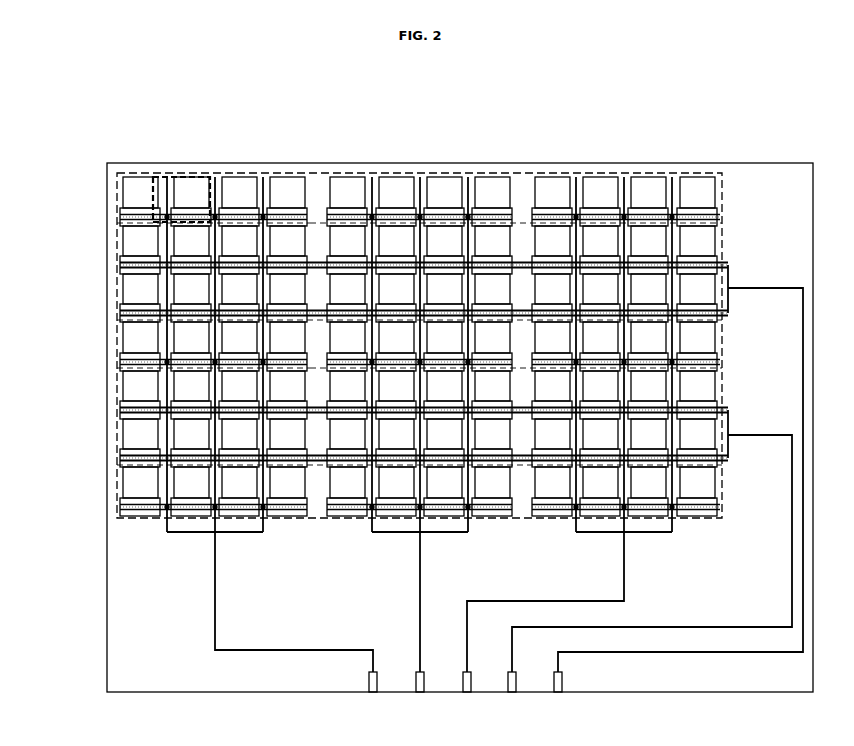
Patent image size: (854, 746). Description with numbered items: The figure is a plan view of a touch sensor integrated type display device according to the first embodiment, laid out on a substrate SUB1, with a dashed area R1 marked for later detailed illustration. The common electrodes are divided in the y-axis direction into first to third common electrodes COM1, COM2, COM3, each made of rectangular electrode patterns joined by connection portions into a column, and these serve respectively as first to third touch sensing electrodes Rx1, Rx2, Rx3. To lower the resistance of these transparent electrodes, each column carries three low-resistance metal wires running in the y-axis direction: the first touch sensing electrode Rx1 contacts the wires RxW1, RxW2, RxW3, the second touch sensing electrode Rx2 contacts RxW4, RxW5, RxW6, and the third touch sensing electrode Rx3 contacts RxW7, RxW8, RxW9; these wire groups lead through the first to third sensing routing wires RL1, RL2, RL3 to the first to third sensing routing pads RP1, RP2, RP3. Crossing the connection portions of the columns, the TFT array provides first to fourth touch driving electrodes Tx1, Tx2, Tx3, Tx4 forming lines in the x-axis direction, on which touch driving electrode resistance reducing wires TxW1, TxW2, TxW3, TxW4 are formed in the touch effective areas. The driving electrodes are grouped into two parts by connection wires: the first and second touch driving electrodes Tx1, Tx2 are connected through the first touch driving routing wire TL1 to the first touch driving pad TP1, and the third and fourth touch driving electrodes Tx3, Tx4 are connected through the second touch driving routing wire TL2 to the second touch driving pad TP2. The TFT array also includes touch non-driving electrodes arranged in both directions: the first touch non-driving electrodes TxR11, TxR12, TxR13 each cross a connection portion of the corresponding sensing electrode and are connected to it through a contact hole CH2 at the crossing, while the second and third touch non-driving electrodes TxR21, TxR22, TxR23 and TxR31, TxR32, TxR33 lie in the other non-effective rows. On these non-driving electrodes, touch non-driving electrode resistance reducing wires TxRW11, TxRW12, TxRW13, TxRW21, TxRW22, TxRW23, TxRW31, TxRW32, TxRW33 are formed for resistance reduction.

The substrate SUB1 is at (683, 672).
The area R1 is at (160, 188).
The contact hole CH2 is at (158, 214).
The first touch sensing electrode Rx1 is at (286, 190).
The first common electrode COM1 is at (214, 320).
The second touch sensing electrode Rx2 is at (500, 190).
The second common electrode COM2 is at (426, 320).
The third touch sensing electrode Rx3 is at (706, 190).
The third common electrode COM3 is at (632, 320).
The 1-1 touch non-driving electrode TxR11 is at (122, 218).
The 1-2 touch non-driving electrode TxR12 is at (334, 212).
The 1-3 touch non-driving electrode TxR13 is at (724, 216).
The second touch non-driving electrode TxR21 is at (122, 363).
The second touch non-driving electrode TxR22 is at (326, 368).
The second touch non-driving electrode TxR23 is at (724, 361).
The third touch non-driving electrode TxR31 is at (122, 508).
The third touch non-driving electrode TxR32 is at (343, 514).
The third touch non-driving electrode TxR33 is at (724, 507).
The touch non-driving electrode resistance reducing wire TxRW11 is at (122, 214).
The touch non-driving electrode resistance reducing wire TxRW12 is at (440, 212).
The touch non-driving electrode resistance reducing wire TxRW13 is at (645, 212).
The touch non-driving electrode resistance reducing wire TxRW21 is at (122, 359).
The touch non-driving electrode resistance reducing wire TxRW22 is at (318, 372).
The touch non-driving electrode resistance reducing wire TxRW23 is at (724, 366).
The touch non-driving electrode resistance reducing wire TxRW31 is at (122, 504).
The touch non-driving electrode resistance reducing wire TxRW32 is at (516, 514).
The touch non-driving electrode resistance reducing wire TxRW33 is at (705, 514).
The first touch driving electrode Tx1 is at (724, 264).
The second touch driving electrode Tx2 is at (724, 319).
The third touch driving electrode Tx3 is at (724, 408).
The fourth touch driving electrode Tx4 is at (724, 464).
The touch driving electrode resistance reducing wire TxW1 is at (731, 270).
The touch driving electrode resistance reducing wire TxW2 is at (731, 312).
The touch driving electrode resistance reducing wire TxW3 is at (731, 414).
The touch driving electrode resistance reducing wire TxW4 is at (731, 457).
The first touch sensing electrode resistance reducing wire RxW1 is at (167, 500).
The first touch sensing electrode resistance reducing wire RxW2 is at (215, 500).
The first touch sensing electrode resistance reducing wire RxW3 is at (263, 500).
The second touch sensing electrode resistance reducing wire RxW4 is at (372, 500).
The second touch sensing electrode resistance reducing wire RxW5 is at (420, 500).
The second touch sensing electrode resistance reducing wire RxW6 is at (468, 500).
The third touch sensing electrode resistance reducing wire RxW7 is at (576, 500).
The third touch sensing electrode resistance reducing wire RxW8 is at (624, 500).
The third touch sensing electrode resistance reducing wire RxW9 is at (672, 500).
The first sensing routing wire RL1 is at (272, 650).
The second sensing routing wire RL2 is at (417, 615).
The third sensing routing wire RL3 is at (520, 600).
The first touch driving routing wire TL1 is at (660, 652).
The second touch driving routing wire TL2 is at (640, 627).
The first sensing routing pad RP1 is at (372, 692).
The second sensing routing pad RP2 is at (419, 692).
The third sensing routing pad RP3 is at (466, 692).
The first touch driving pad TP1 is at (557, 692).
The second touch driving pad TP2 is at (511, 692).